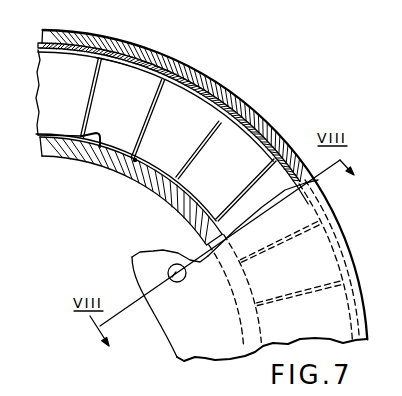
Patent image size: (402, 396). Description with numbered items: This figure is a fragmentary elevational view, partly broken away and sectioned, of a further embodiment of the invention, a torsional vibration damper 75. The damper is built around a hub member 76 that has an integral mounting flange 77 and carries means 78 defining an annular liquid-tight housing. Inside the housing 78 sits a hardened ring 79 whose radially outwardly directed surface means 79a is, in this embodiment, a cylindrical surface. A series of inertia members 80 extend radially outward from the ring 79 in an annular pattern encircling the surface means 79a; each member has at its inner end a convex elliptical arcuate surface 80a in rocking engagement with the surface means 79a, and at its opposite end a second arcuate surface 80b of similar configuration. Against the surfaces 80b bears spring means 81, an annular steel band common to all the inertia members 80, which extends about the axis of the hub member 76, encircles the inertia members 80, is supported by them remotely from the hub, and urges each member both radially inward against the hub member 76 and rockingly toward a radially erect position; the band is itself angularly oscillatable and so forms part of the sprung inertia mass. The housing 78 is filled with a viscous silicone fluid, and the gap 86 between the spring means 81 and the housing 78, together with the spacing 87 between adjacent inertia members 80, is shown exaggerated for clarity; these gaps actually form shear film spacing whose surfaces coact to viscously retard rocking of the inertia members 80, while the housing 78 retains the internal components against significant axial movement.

The torsional vibration damper 75 is at (172, 207).
The hub member 76 is at (256, 354).
The mounting flange 77 is at (206, 354).
The annular liquid-tight housing 78 is at (279, 133).
The hardened ring 79 is at (56, 135).
The radially outwardly directed surface means 79a is at (96, 146).
The inertia members 80 is at (111, 111).
The arcuate surface 80a is at (137, 160).
The second arcuate surface 80b is at (113, 60).
The spring means 81 is at (186, 72).
The gap 86 is at (248, 111).
The spacing 87 is at (220, 118).